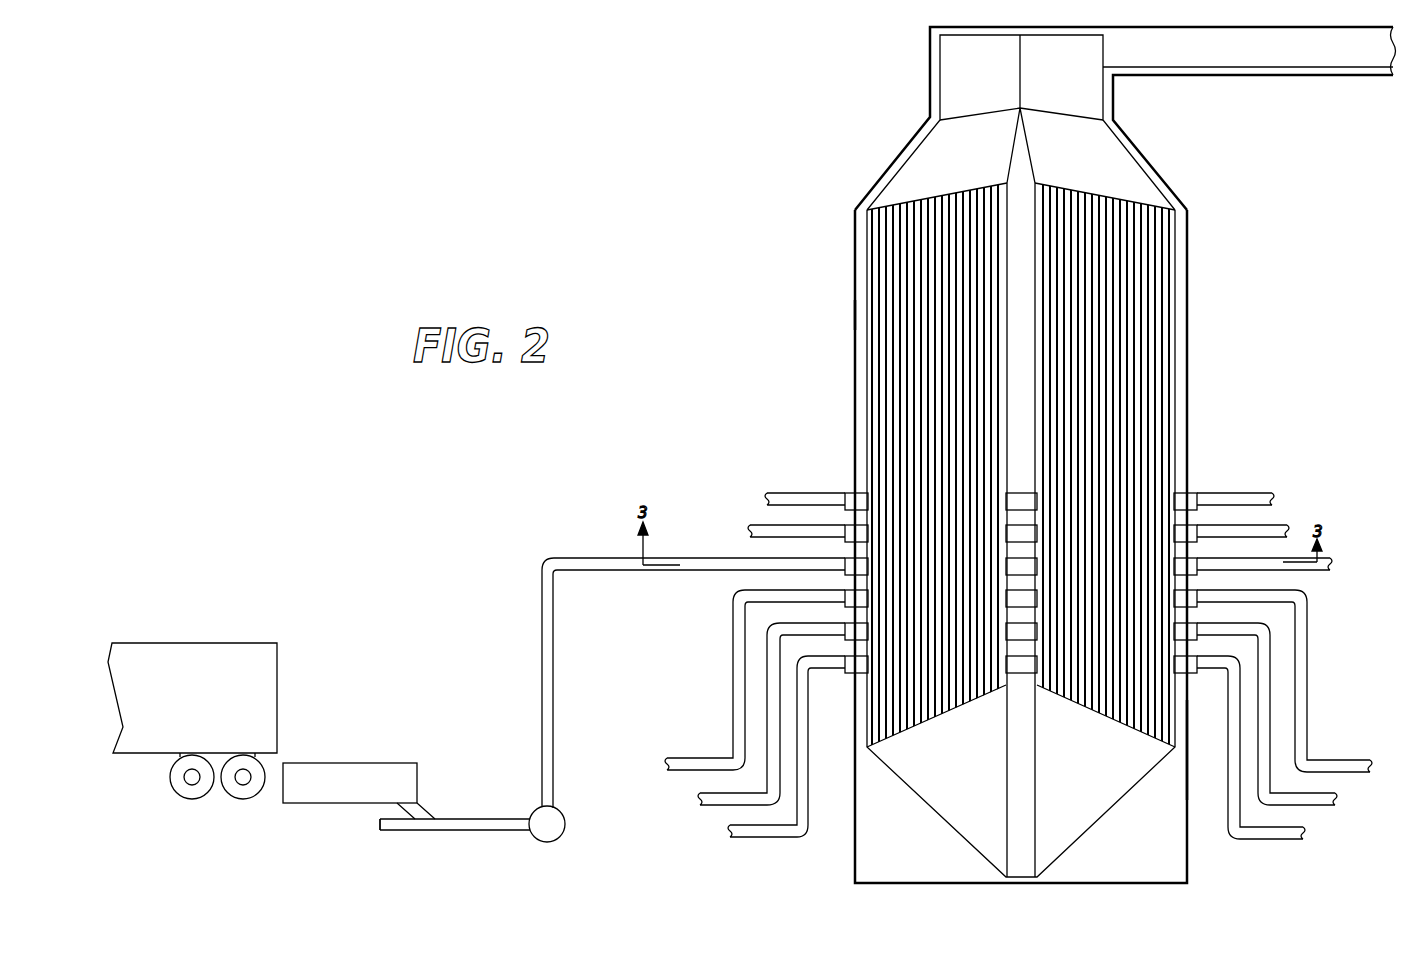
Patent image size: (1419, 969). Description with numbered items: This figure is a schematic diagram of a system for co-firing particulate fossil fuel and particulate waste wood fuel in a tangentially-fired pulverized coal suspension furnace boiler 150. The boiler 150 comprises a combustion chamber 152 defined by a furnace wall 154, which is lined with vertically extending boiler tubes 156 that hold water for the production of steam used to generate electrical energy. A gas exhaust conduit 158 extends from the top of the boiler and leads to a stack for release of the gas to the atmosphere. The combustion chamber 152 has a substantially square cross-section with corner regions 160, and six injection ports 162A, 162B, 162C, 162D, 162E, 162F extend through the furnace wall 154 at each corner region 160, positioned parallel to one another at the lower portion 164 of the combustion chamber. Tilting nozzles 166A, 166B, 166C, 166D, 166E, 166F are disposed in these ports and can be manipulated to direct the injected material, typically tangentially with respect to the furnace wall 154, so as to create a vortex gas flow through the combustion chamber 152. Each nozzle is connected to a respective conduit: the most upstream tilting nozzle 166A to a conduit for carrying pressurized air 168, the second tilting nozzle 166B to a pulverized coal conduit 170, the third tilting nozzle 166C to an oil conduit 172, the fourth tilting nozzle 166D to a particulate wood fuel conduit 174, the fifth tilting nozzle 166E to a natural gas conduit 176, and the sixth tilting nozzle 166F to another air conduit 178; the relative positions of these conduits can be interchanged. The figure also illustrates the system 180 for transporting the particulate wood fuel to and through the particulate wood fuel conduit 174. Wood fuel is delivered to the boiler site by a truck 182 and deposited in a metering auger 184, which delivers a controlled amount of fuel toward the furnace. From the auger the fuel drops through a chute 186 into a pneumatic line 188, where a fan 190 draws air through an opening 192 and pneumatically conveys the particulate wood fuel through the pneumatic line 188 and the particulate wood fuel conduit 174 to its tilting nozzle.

The tangentially-fired particulate fossil fuel suspension furnace boiler 150 is at (698, 216).
The combustion chamber 152 is at (1170, 230).
The furnace wall 154 is at (855, 263).
The heat exchange tubes 156 is at (885, 233).
The gas exhaust conduit 158 is at (1210, 78).
The corner regions 160 is at (1025, 198).
The injection port 162A is at (1016, 658).
The injection port 162B is at (1016, 625).
The injection port 162C is at (1016, 592).
The injection port 162D is at (1016, 560).
The injection port 162E is at (1016, 527).
The injection port 162F is at (1016, 495).
The lower portion of the combustion chamber 164 is at (1192, 725).
The most upstream tilting nozzle 166A is at (840, 660).
The second tilting nozzle 166B is at (840, 623).
The third tilting nozzle 166C is at (840, 590).
The fourth tilting nozzle 166D is at (840, 558).
The fifth tilting nozzle 166E is at (840, 525).
The sixth tilting nozzle 166F is at (840, 493).
The conduit for carrying pressurized air 168 is at (748, 837).
The pulverized coal conduit 170 is at (712, 805).
The oil conduit 172 is at (672, 770).
The particulate wood fuel conduit 174 is at (600, 572).
The natural gas conduit 176 is at (750, 522).
The air conduit 178 is at (767, 490).
The system for transporting the particulate wood fuel 180 is at (458, 710).
The truck 182 is at (237, 643).
The metering auger 184 is at (338, 763).
The chute 186 is at (424, 810).
The pneumatic line 188 is at (427, 832).
The fan 190 is at (550, 843).
The opening 192 is at (377, 823).